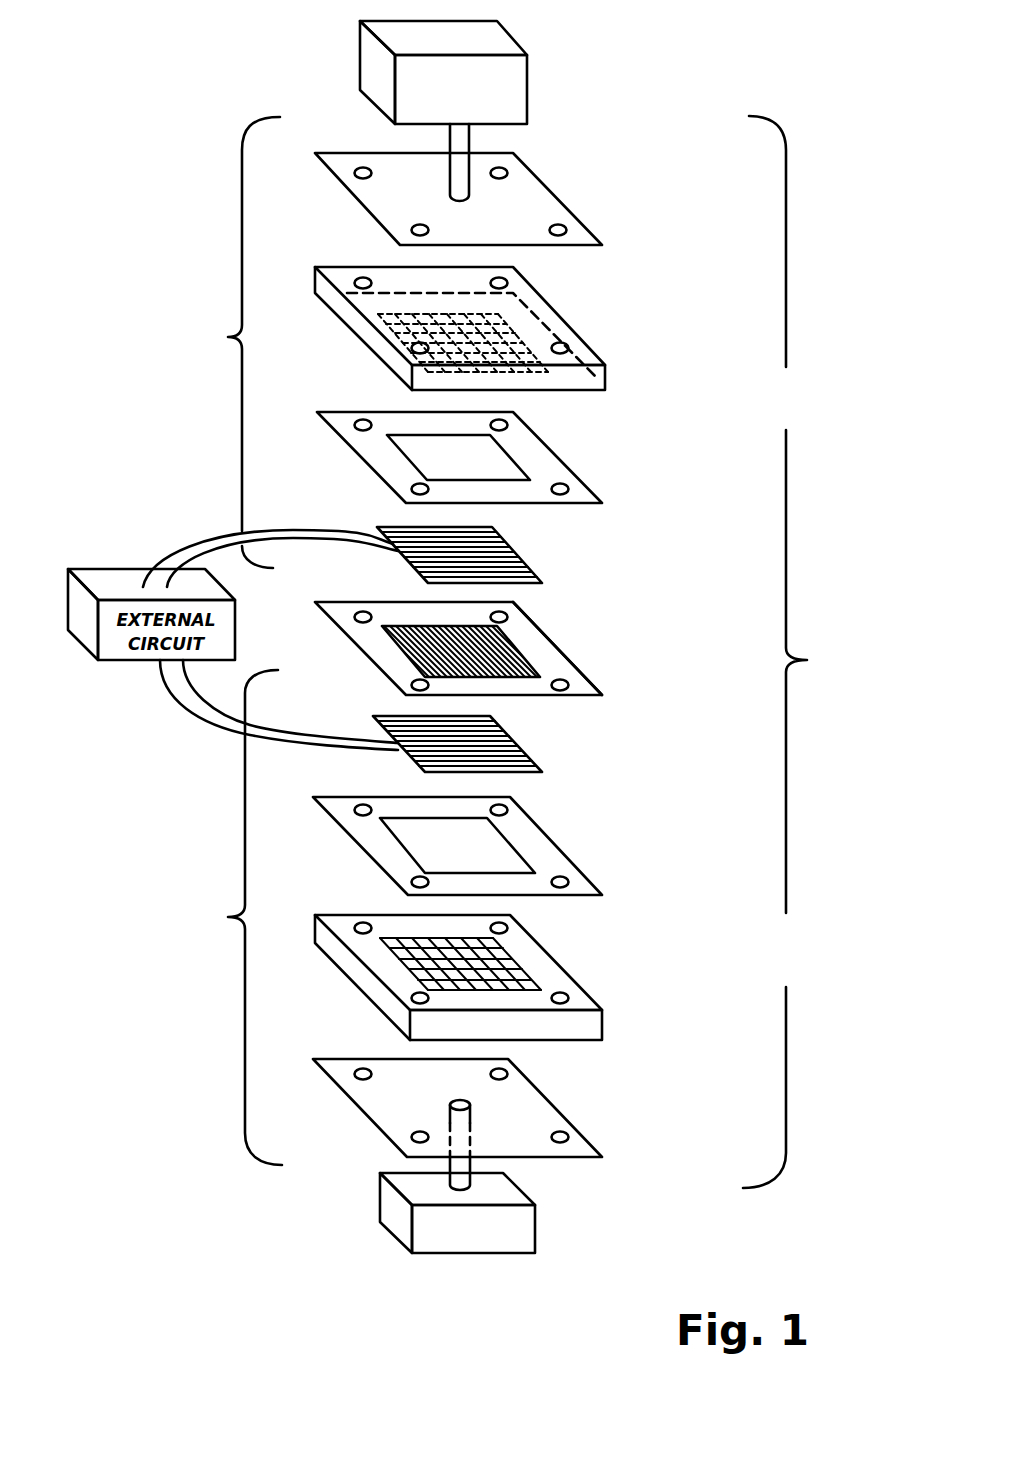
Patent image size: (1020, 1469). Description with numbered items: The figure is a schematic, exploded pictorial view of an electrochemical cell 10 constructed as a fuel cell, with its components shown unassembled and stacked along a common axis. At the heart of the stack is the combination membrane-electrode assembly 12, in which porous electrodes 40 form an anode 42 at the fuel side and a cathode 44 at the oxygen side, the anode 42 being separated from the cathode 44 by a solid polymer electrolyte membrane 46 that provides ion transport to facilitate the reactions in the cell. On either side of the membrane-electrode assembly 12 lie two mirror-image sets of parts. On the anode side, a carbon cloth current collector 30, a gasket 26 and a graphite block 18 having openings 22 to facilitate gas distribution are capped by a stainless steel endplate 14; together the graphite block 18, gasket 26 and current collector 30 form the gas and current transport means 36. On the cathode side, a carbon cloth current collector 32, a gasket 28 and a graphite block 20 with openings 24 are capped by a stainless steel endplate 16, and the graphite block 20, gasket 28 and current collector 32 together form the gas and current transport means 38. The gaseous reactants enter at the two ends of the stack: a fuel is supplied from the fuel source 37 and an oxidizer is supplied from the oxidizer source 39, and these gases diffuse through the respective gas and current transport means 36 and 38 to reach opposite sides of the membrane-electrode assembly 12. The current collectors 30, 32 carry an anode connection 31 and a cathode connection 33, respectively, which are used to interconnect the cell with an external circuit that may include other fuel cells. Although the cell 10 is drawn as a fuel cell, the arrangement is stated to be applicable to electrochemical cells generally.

The electrochemical cell 10 is at (792, 652).
The membrane-electrode assembly 12 is at (563, 653).
The stainless steel endplate 14 is at (560, 1105).
The stainless steel endplate 16 is at (550, 192).
The graphite block 18 is at (563, 960).
The graphite block 20 is at (605, 380).
The openings 22 is at (513, 953).
The openings 24 is at (497, 332).
The gasket 26 is at (563, 848).
The gasket 28 is at (560, 462).
The carbon cloth current collector 30 is at (527, 777).
The anode connection 31 is at (343, 743).
The carbon cloth current collector 32 is at (527, 560).
The cathode connection 33 is at (338, 537).
The gas and current transport means 36 is at (235, 917).
The fuel source 37 is at (535, 1238).
The gas and current transport means 38 is at (233, 342).
The oxidizer source 39 is at (500, 30).
The porous electrodes 40 is at (505, 663).
The anode 42 is at (493, 677).
The cathode 44 is at (500, 643).
The solid polymer electrolyte membrane 46 is at (585, 692).